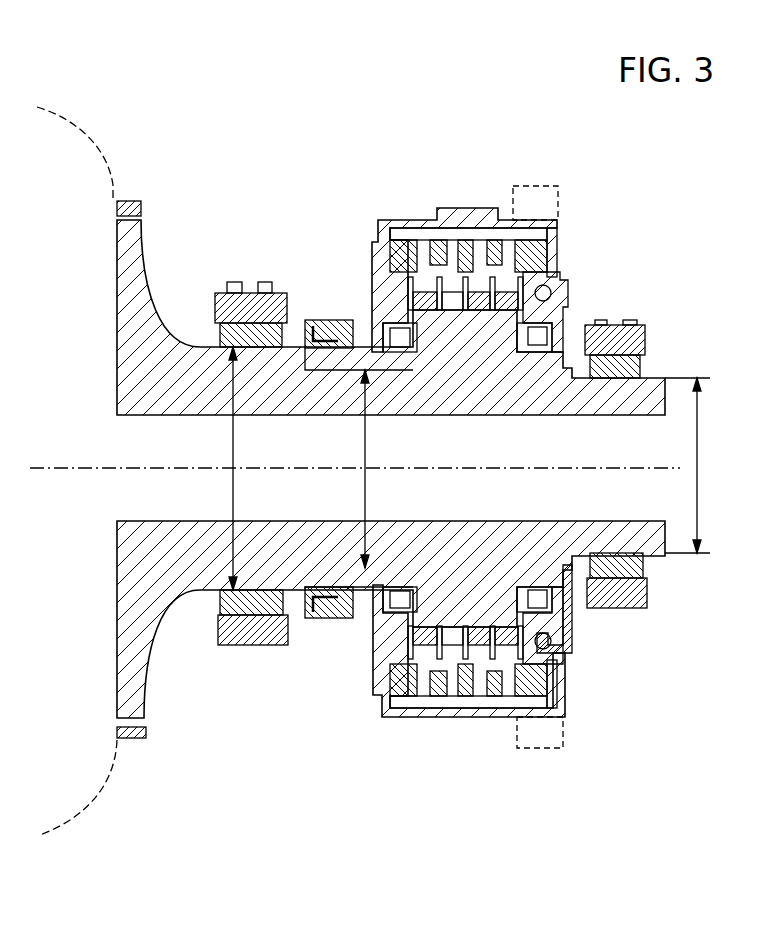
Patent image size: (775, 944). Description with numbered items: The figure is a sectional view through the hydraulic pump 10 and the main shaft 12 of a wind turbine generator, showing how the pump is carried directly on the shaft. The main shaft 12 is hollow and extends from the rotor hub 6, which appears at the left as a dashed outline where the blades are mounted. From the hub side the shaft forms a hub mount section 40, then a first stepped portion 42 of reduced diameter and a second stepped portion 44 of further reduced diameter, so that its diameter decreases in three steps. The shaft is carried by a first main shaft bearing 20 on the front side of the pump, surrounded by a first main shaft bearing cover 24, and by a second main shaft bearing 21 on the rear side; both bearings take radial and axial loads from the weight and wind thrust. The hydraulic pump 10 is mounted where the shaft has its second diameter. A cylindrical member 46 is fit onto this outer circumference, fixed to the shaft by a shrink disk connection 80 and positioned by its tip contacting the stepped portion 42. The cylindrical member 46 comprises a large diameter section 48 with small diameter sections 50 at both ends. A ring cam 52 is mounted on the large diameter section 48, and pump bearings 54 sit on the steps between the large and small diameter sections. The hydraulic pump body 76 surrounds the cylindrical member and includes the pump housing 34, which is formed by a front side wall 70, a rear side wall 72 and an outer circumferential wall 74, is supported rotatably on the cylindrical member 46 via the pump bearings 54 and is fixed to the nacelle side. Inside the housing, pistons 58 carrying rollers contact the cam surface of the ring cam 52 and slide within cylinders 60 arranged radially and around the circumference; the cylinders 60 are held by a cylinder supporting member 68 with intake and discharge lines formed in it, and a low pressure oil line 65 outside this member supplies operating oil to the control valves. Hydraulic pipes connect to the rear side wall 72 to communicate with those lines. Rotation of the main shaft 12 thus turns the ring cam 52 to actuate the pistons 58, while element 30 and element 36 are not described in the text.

The rotor hub 6 is at (100, 797).
The hydraulic pump 10 is at (425, 451).
The main shaft 12 is at (148, 636).
The first main shaft bearing 20 is at (220, 346).
The second main shaft bearing 21 is at (642, 365).
The first main shaft bearing cover 24 is at (233, 282).
The bearing 30 is at (645, 334).
The pump housing 34 is at (472, 451).
The connector 36 is at (565, 742).
The hub mount section 40 is at (152, 255).
The first stepped portion 42 is at (297, 378).
The second stepped portion 44 is at (584, 382).
The cylindrical member 46 is at (570, 595).
The large diameter section 48 is at (459, 352).
The small diameter section 50 is at (333, 376).
The ring cam 52 is at (492, 700).
The pump bearing 54 is at (542, 330).
The piston 58 is at (482, 290).
The cylinder 60 is at (540, 252).
The low pressure oil line 65 is at (450, 240).
The cylinder supporting member 68 is at (550, 228).
The front side wall 70 is at (372, 295).
The rear side wall 72 is at (560, 292).
The outer circumferential wall 74 is at (397, 220).
The hydraulic pump body 76 is at (361, 219).
The shrink disk connection 80 is at (327, 626).